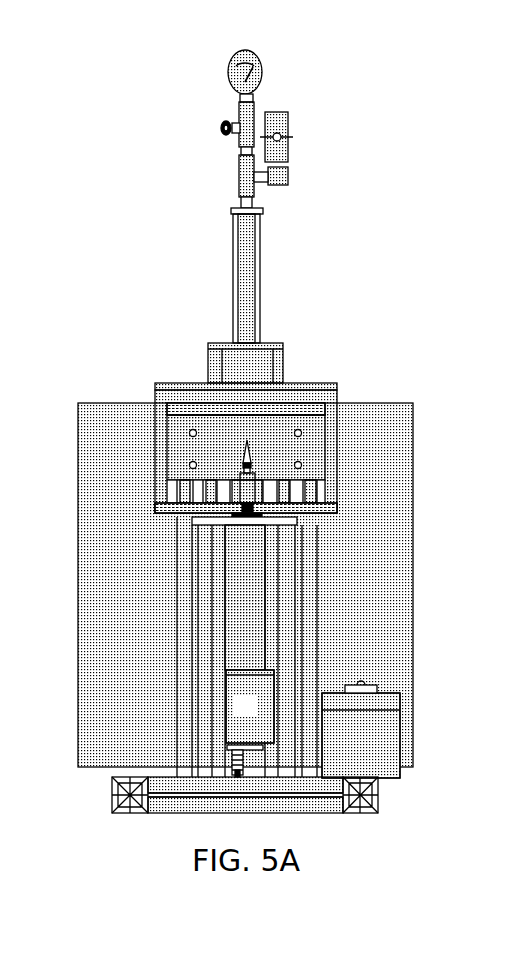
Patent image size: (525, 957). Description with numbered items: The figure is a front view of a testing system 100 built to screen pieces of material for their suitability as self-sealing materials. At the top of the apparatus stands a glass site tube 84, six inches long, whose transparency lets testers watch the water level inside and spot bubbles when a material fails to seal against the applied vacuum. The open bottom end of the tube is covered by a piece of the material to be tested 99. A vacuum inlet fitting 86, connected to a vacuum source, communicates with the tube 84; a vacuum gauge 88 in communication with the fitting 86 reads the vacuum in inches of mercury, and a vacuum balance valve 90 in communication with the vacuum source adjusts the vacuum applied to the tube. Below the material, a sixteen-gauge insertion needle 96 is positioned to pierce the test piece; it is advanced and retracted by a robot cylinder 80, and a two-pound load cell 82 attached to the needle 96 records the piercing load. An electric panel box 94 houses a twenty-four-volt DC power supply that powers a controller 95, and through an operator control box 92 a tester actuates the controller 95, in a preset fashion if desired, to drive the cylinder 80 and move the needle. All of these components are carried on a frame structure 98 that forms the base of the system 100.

The testing system 100 is at (394, 262).
The vacuum gauge 88 is at (263, 70).
The vacuum inlet fitting 86 is at (218, 130).
The vacuum balance valve 90 is at (288, 143).
The glass site tube 84 is at (247, 288).
The material to be tested 99 is at (250, 340).
The electric panel box 94 is at (373, 403).
The needle 96 is at (247, 430).
The load cell 82 is at (251, 468).
The cylinder 80 is at (265, 582).
The controller 95 is at (250, 723).
The operator control box 92 is at (524, 766).
The frame structure 98 is at (168, 815).